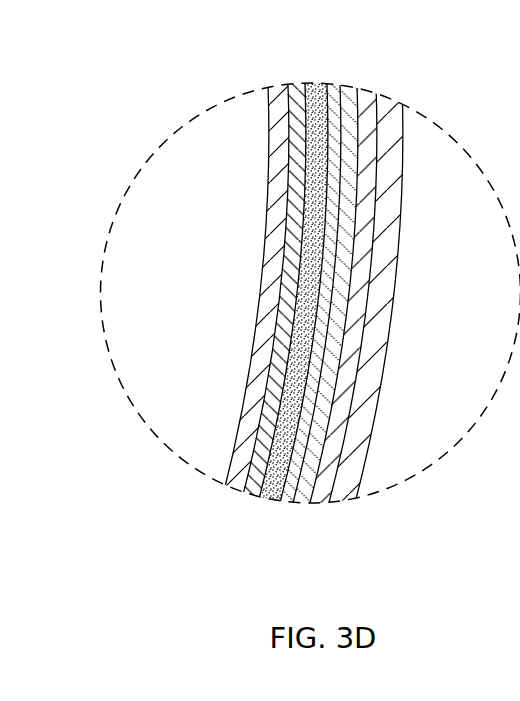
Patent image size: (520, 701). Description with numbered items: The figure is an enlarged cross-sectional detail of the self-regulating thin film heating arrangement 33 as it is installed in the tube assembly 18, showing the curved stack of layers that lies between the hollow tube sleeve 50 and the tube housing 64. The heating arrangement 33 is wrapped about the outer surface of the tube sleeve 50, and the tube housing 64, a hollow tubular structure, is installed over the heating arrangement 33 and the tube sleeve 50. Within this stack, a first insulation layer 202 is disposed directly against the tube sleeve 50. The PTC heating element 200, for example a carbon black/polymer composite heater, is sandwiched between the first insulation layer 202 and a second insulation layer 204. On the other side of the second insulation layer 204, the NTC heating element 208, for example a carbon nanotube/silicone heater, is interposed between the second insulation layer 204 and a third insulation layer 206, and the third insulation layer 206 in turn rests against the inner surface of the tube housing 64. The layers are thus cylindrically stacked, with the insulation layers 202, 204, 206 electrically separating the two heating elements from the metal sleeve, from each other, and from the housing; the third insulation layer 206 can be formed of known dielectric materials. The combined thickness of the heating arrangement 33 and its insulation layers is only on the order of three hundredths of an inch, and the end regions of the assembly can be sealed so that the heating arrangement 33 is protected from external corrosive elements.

The tube assembly 18 is at (427, 41).
The self-regulating thin film heating arrangement 33 is at (242, 252).
The tube sleeve 50 is at (264, 393).
The tube housing 64 is at (389, 143).
The PTC heating element 200 is at (298, 228).
The first insulation layer 202 is at (280, 360).
The second insulation layer 204 is at (358, 298).
The third insulation layer 206 is at (374, 190).
The NTC heating element 208 is at (380, 258).